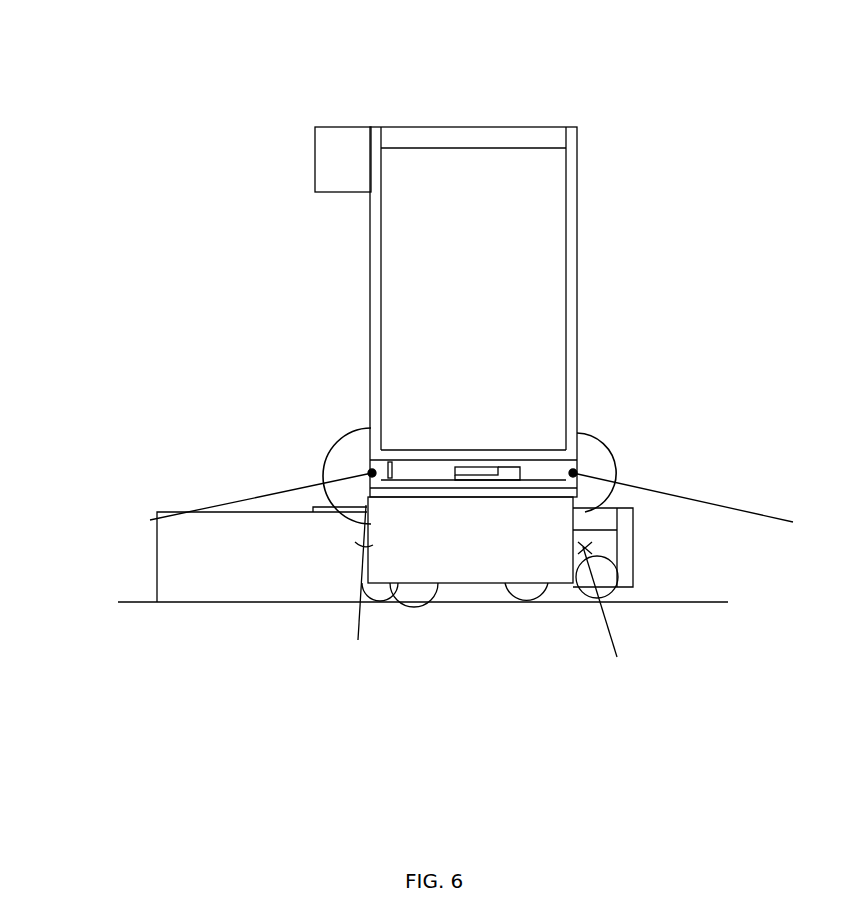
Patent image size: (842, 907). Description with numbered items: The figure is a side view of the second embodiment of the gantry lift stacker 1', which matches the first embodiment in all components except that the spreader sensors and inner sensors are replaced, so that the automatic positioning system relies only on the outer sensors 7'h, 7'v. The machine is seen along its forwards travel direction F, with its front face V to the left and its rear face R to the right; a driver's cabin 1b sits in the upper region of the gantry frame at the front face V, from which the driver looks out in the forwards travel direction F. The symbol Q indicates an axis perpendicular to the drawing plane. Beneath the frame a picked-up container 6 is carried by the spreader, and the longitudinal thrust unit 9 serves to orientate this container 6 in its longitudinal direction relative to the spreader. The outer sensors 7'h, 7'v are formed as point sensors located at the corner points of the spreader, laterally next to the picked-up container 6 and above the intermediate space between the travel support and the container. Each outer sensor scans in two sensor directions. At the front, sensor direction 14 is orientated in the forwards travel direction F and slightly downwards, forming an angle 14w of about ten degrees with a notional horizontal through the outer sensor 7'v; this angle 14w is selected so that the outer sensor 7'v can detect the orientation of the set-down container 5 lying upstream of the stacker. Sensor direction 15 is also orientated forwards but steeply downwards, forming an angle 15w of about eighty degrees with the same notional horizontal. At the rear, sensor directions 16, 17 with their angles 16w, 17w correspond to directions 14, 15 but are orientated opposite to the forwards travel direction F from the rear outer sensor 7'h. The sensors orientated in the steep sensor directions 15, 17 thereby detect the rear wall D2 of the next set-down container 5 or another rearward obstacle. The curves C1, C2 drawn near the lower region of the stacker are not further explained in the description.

The gantry lift stacker 1' is at (485, 267).
The driver's cabin 1b is at (337, 143).
The set-down container 5 is at (188, 590).
The picked-up container 6 is at (433, 530).
The longitudinal thrust unit 9 is at (480, 465).
The sensor direction 14 is at (247, 502).
The angle 14w is at (333, 490).
The sensor direction 15 is at (355, 557).
The angle 15w is at (363, 591).
The sensor direction 16 is at (722, 502).
The angle 16w is at (592, 490).
The sensor direction 17 is at (600, 573).
The angle 17w is at (619, 611).
The front outer sensor 7'v is at (274, 395).
The rear outer sensor 7'h is at (671, 396).
The curve C1 is at (372, 548).
The curve C2 is at (583, 548).
The rear wall D2 is at (365, 560).
The forwards travel direction F is at (170, 193).
The axis Q is at (213, 226).
The front face V is at (335, 276).
The rear face R is at (599, 263).